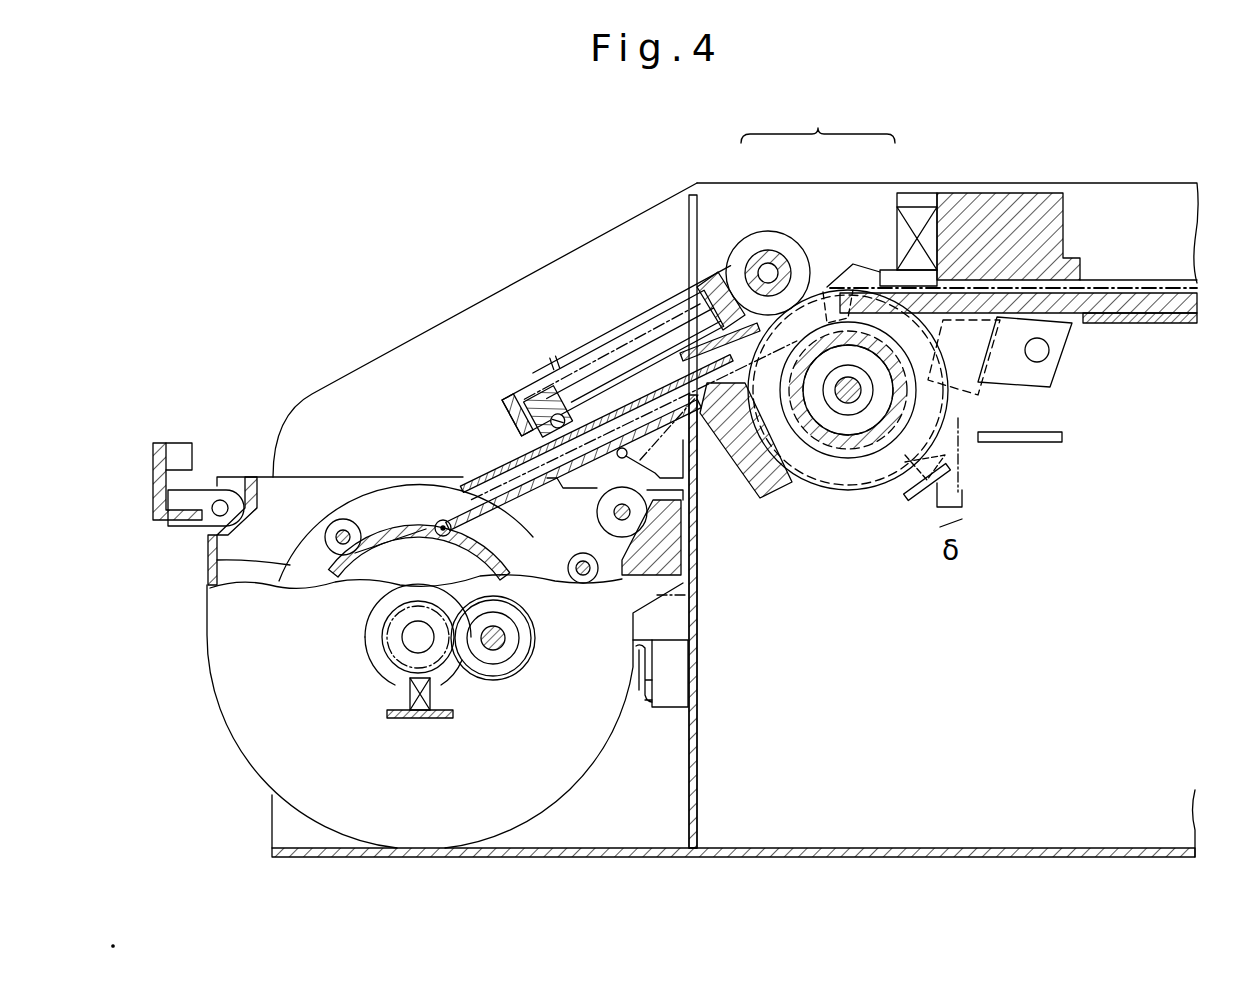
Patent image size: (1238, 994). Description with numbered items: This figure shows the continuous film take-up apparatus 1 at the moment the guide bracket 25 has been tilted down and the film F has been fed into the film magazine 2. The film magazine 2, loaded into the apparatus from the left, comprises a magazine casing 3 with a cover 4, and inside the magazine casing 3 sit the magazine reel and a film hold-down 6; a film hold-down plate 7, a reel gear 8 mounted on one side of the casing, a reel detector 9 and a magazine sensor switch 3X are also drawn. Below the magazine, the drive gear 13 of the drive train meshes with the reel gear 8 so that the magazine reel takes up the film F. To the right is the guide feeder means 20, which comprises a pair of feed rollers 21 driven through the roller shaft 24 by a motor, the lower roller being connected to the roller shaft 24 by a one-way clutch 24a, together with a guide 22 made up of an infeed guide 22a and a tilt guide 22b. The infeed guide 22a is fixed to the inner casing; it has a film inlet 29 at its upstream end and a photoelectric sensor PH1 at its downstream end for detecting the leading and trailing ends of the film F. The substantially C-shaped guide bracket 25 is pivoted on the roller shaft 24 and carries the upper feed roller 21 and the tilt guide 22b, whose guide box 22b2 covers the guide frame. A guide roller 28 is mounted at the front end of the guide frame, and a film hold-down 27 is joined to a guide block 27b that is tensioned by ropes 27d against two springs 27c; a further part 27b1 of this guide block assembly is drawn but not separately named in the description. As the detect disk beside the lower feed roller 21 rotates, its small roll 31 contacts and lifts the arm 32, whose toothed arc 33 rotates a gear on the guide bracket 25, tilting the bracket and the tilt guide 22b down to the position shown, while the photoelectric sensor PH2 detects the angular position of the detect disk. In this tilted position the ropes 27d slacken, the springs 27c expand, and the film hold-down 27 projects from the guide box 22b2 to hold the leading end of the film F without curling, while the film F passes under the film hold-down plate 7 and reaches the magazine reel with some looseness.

The continuous film take-up apparatus 1 is at (343, 348).
The film magazine 2 is at (173, 425).
The magazine casing 3 is at (205, 630).
The magazine sensor switch 3X is at (665, 698).
The cover 4 is at (170, 523).
The film hold-down 6 is at (215, 577).
The film hold-down plate 7 is at (383, 533).
The reel gear 8 is at (388, 652).
The reel detector 9 is at (418, 720).
The drive gear 13 is at (508, 668).
The guide feeder means 20 is at (624, 203).
The feed rollers 21 is at (823, 292).
The guide 22 is at (818, 124).
The infeed guide 22a is at (915, 192).
The tilt guide 22b is at (708, 260).
The guide box 22b2 is at (607, 337).
The roller shaft 24 is at (856, 400).
The one-way clutch 24a is at (848, 404).
The guide bracket 25 is at (777, 490).
The film hold-down 27 is at (483, 482).
The guide block 27b is at (540, 393).
The guide rails 27b1 is at (515, 453).
The springs 27c is at (567, 370).
The ropes 27d is at (700, 457).
The guide roller 28 is at (427, 513).
The film inlet 29 is at (1090, 270).
The small roll 31 is at (857, 318).
The arm 32 is at (1060, 337).
The toothed arc 33 is at (960, 378).
The photoelectric sensor PH1 is at (928, 240).
The photoelectric sensor PH2 is at (938, 487).
The film F is at (1165, 287).